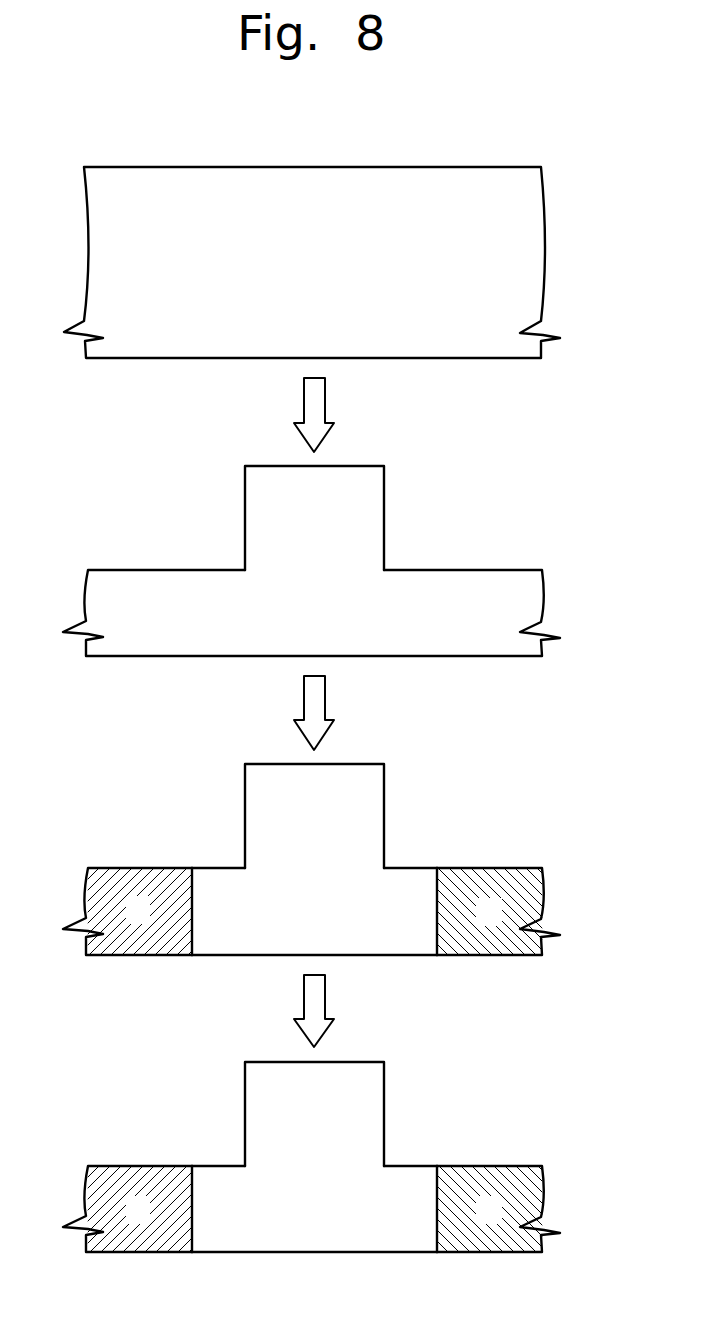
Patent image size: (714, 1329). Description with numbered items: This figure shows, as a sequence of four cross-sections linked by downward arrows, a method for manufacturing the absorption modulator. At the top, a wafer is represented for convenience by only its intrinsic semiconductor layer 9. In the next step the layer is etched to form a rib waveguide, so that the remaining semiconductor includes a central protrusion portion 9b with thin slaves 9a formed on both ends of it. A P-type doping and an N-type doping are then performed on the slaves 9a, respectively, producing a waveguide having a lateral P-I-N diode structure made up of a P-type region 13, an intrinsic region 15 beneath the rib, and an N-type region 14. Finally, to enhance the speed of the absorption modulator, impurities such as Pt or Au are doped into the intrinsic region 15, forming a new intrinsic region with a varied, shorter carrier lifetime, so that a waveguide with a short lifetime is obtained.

The intrinsic semiconductor layer 9 is at (530, 246).
The slaves 9a is at (525, 600).
The central protrusion portion 9b is at (372, 498).
The intrinsic region 15 is at (372, 797).
The P-type region 13 is at (139, 880).
The N-type region 14 is at (503, 880).